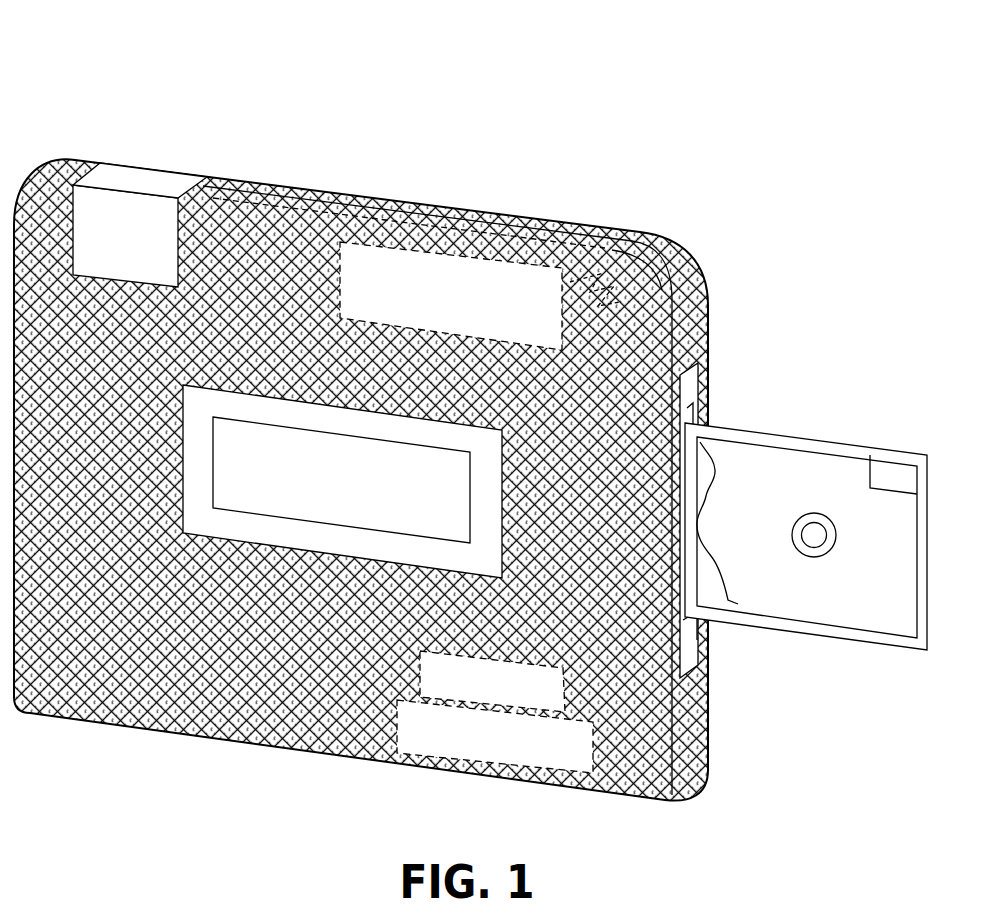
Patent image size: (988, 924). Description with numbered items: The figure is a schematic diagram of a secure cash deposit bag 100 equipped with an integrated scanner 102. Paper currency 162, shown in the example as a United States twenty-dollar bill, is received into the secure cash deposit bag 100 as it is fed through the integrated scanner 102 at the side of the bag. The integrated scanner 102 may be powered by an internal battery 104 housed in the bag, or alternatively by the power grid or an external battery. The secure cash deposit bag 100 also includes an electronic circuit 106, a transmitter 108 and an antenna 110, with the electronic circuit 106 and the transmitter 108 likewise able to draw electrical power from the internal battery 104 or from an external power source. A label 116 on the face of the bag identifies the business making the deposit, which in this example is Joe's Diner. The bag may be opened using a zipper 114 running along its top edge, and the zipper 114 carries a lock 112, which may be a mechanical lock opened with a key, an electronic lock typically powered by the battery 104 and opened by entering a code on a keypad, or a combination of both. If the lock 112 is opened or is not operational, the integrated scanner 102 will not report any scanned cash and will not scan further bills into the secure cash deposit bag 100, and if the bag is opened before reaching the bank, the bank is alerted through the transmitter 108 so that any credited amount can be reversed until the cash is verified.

The secure cash deposit bag 100 is at (60, 79).
The integrated scanner 102 is at (697, 383).
The internal battery 104 is at (713, 802).
The electronic circuit 106 is at (715, 743).
The transmitter 108 is at (468, 235).
The antenna 110 is at (628, 238).
The lock 112 is at (146, 180).
The zipper 114 is at (553, 232).
The label 116 is at (250, 405).
The paper currency 162 is at (838, 450).